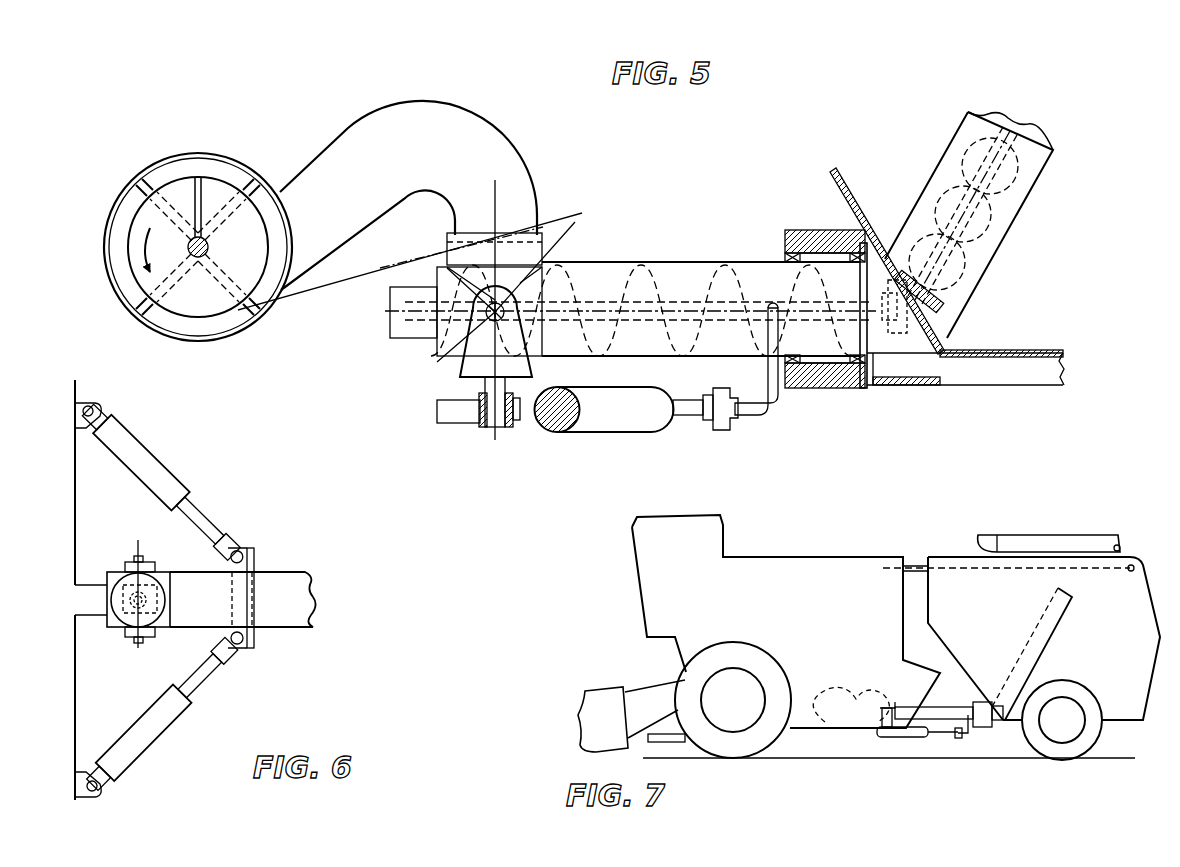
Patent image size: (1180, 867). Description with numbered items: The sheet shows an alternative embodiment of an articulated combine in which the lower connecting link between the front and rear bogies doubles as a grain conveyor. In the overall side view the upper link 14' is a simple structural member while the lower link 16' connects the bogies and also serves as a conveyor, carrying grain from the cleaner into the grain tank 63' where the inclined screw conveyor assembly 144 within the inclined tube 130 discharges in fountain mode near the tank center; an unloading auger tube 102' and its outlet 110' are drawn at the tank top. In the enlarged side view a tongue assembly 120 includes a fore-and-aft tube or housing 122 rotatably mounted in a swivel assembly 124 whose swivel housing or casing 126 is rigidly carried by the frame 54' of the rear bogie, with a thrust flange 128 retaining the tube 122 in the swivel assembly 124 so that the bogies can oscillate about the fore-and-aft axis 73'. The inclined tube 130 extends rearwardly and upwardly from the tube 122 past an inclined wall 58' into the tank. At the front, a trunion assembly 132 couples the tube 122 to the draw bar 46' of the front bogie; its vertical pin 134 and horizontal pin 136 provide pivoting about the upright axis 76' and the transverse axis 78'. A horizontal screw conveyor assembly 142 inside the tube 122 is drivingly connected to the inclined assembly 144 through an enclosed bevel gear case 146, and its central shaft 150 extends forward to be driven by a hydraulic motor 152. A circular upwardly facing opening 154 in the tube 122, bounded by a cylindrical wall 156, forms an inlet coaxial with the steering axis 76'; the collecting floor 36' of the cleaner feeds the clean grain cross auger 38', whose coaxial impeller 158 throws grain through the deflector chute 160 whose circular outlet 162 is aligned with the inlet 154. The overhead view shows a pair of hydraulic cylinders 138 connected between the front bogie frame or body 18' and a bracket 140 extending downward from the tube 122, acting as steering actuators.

In FIG. 7, the upper link 14' is at (856, 636).
In FIG. 7, the lower link 16' is at (965, 770).
In FIG. 6, the frame or body of the front bogie 18' is at (96, 590).
In FIG. 5, the collecting floor 36' is at (292, 324).
In FIG. 5, the clean grain cross auger 38' is at (175, 247).
In FIG. 5, the draw bar 46' is at (458, 427).
In FIG. 6, the draw bar 46' is at (101, 634).
In FIG. 5, the frame of the rear bogie 54' is at (962, 340).
In FIG. 5, the inclined wall 58' is at (887, 247).
In FIG. 5, the grain tank 63' is at (1093, 162).
In FIG. 7, the grain tank 63' is at (1044, 627).
In FIG. 5, the fore-and-aft axis 73' is at (388, 315).
In FIG. 5, the upright axis 76' is at (485, 456).
In FIG. 6, the transverse axis 78' is at (163, 591).
In FIG. 7, the auger tube 102' is at (976, 584).
In FIG. 7, the conveyor outlet 110' is at (1109, 605).
In FIG. 5, the tongue assembly 120 is at (669, 250).
In FIG. 6, the tongue assembly 120 is at (266, 643).
In FIG. 5, the tube or housing 122 is at (641, 248).
In FIG. 7, the tube or housing 122 is at (920, 698).
In FIG. 5, the swivel assembly 124 is at (770, 225).
In FIG. 5, the swivel housing or casing 126 is at (811, 230).
In FIG. 5, the thrust flange 128 is at (856, 389).
In FIG. 5, the inclined tube 130 is at (966, 124).
In FIG. 7, the inclined tube 130 is at (1052, 633).
In FIG. 5, the trunion assembly 132 is at (432, 375).
In FIG. 6, the trunion assembly 132 is at (124, 553).
In FIG. 5, the vertical pin 134 is at (495, 428).
In FIG. 7, the vertical pin 134 is at (894, 738).
In FIG. 5, the horizontal pin 136 is at (437, 364).
In FIG. 5, the hydraulic cylinders 138 is at (596, 432).
In FIG. 6, the hydraulic cylinders 138 is at (170, 477).
In FIG. 5, the bracket 140 is at (776, 409).
In FIG. 6, the bracket 140 is at (257, 566).
In FIG. 5, the horizontal screw conveyor assembly 142 is at (689, 266).
In FIG. 5, the inclined screw conveyor assembly 144 is at (1000, 208).
In FIG. 5, the bevel gear case 146 is at (948, 320).
In FIG. 5, the central shaft 150 is at (630, 295).
In FIG. 5, the hydraulic motor 152 is at (390, 303).
In FIG. 5, the opening 154 is at (542, 264).
In FIG. 5, the cylindrical wall 156 is at (447, 245).
In FIG. 5, the impeller 158 is at (211, 148).
In FIG. 5, the deflector chute 160 is at (351, 127).
In FIG. 5, the outlet 162 is at (537, 212).